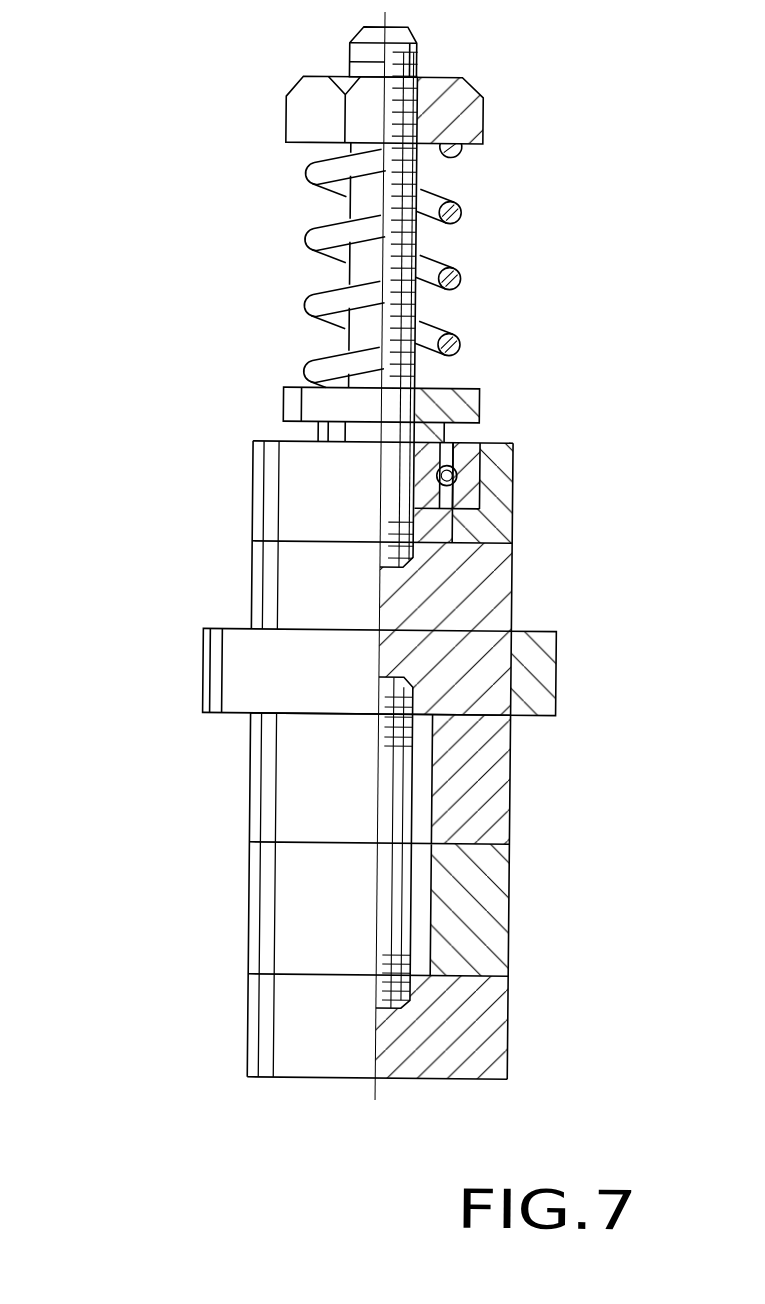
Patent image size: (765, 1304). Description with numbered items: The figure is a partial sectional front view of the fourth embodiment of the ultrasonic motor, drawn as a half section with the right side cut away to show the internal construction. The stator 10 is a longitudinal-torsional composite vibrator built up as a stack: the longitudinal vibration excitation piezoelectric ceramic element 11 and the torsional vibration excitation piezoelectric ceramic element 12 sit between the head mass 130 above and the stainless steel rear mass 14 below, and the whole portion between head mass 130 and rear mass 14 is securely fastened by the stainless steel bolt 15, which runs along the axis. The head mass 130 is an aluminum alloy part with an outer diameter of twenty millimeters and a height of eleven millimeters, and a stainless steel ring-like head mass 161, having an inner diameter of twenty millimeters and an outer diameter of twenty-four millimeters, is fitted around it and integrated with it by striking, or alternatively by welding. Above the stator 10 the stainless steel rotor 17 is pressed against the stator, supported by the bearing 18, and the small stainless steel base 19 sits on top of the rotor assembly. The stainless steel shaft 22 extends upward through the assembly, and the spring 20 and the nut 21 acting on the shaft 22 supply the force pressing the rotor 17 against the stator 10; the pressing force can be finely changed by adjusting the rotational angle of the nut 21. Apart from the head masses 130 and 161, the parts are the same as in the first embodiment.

The stator 10 is at (117, 1086).
The longitudinal vibration excitation piezoelectric ceramic element 11 is at (475, 797).
The torsional vibration excitation piezoelectric ceramic element 12 is at (489, 945).
The rear mass 14 is at (489, 1040).
The bolt 15 is at (390, 888).
The rotor 17 is at (513, 527).
The bearing 18 is at (469, 482).
The base 19 is at (462, 403).
The spring 20 is at (456, 277).
The nut 21 is at (479, 118).
The shaft 22 is at (412, 33).
The head mass 130 is at (490, 592).
The ring-like head mass 161 is at (549, 690).